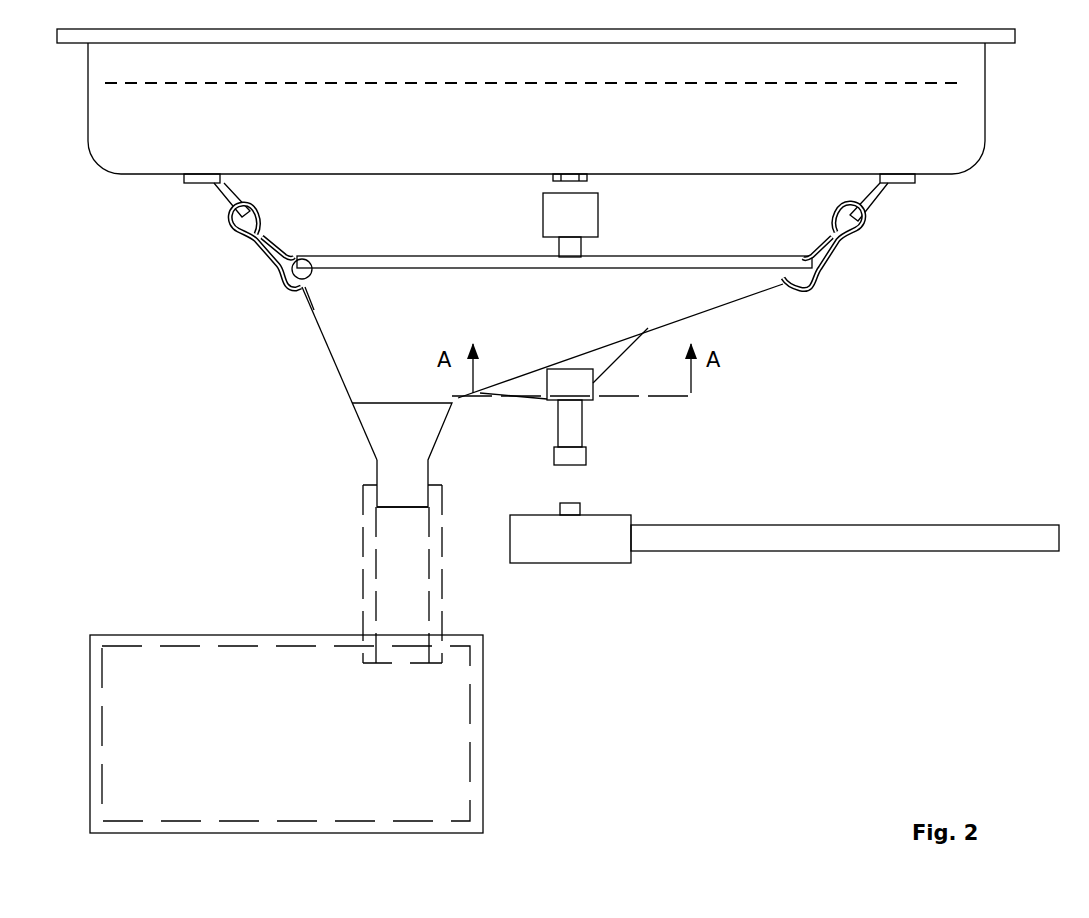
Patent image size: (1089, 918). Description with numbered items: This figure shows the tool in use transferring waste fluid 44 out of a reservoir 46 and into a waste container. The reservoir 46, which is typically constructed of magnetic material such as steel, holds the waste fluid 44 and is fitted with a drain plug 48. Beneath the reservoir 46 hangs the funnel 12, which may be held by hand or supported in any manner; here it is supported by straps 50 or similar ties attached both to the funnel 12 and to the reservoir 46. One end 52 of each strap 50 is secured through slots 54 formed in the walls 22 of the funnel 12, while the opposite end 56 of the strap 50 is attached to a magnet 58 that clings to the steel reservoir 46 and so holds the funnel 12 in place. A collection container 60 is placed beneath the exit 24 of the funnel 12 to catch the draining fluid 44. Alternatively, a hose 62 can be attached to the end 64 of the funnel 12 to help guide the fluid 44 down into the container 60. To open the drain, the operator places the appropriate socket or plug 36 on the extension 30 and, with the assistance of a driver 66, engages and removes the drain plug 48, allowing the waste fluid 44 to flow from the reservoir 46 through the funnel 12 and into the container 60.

The funnel 12 is at (348, 335).
The walls 22 is at (680, 298).
The exit 24 is at (396, 513).
The extension 30 is at (568, 437).
The socket or plug 36 is at (560, 209).
The waste fluid 44 is at (532, 108).
The reservoir 46 is at (986, 110).
The drain plug 48 is at (582, 180).
The straps 50 is at (847, 239).
The one end 52 is at (822, 289).
The slots 54 is at (787, 292).
The opposite end 56 is at (820, 209).
The magnet 58 is at (905, 184).
The collection container 60 is at (485, 710).
The hose 62 is at (444, 585).
The end 64 is at (390, 480).
The driver 66 is at (759, 542).